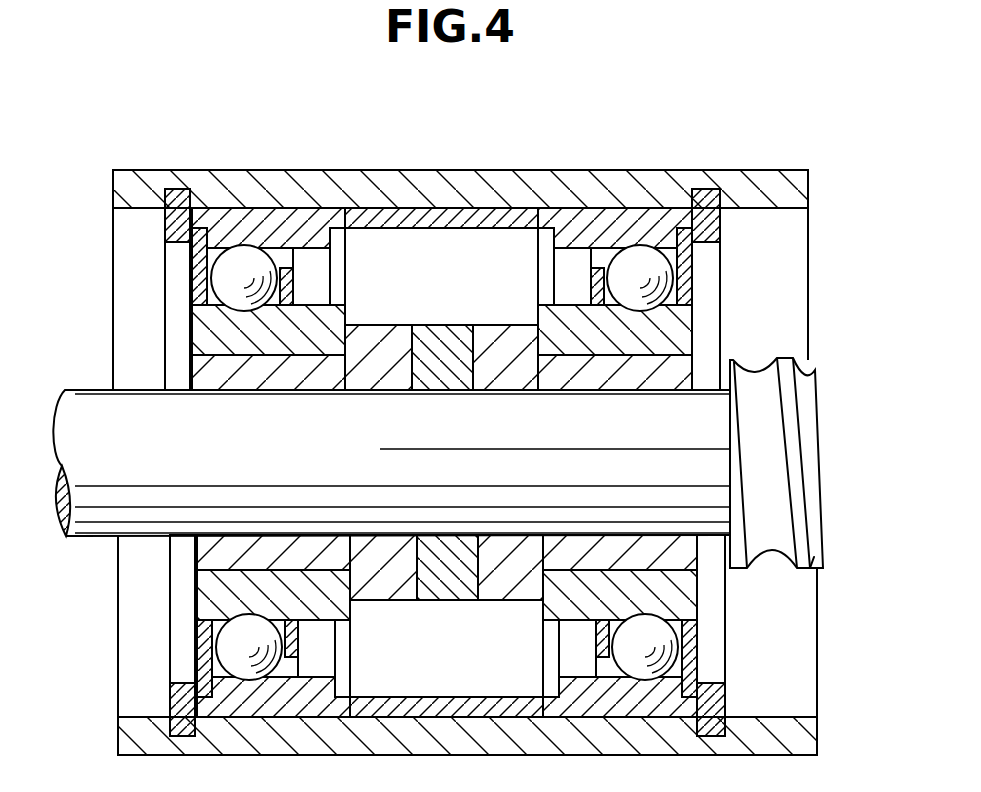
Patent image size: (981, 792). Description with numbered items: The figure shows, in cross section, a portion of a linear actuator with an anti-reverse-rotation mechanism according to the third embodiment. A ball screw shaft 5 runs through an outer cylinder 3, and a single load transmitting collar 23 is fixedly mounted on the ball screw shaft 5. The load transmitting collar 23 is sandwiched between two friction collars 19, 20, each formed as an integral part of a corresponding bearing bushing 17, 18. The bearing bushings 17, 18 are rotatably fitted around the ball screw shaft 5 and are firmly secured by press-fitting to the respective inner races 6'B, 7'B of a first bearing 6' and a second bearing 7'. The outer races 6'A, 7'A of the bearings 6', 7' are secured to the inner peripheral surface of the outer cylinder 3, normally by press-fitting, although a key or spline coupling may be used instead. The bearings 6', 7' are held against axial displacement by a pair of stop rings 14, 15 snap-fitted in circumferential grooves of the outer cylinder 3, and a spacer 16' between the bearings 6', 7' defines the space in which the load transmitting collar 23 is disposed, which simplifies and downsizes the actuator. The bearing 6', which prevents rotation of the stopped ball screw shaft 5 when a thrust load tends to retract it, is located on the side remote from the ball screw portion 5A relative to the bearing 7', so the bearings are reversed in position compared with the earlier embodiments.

The outer cylinder 3 is at (503, 178).
The ball screw shaft 5 is at (95, 386).
The ball screw portion 5A is at (760, 543).
The first bearing 6' is at (199, 402).
The outer race of first bearing 6'A is at (271, 402).
The inner race of first bearing 6'B is at (271, 462).
The second bearing 7' is at (700, 402).
The outer race of second bearing 7'A is at (617, 402).
The inner race of second bearing 7'B is at (617, 462).
The stop ring 14 is at (704, 187).
The stop ring 15 is at (176, 187).
The spacer 16' is at (444, 402).
The bearing bushing 17 is at (296, 372).
The bearing bushing 18 is at (646, 372).
The friction collar 19 is at (371, 350).
The friction collar 20 is at (508, 350).
The load transmitting collar 23 is at (440, 330).